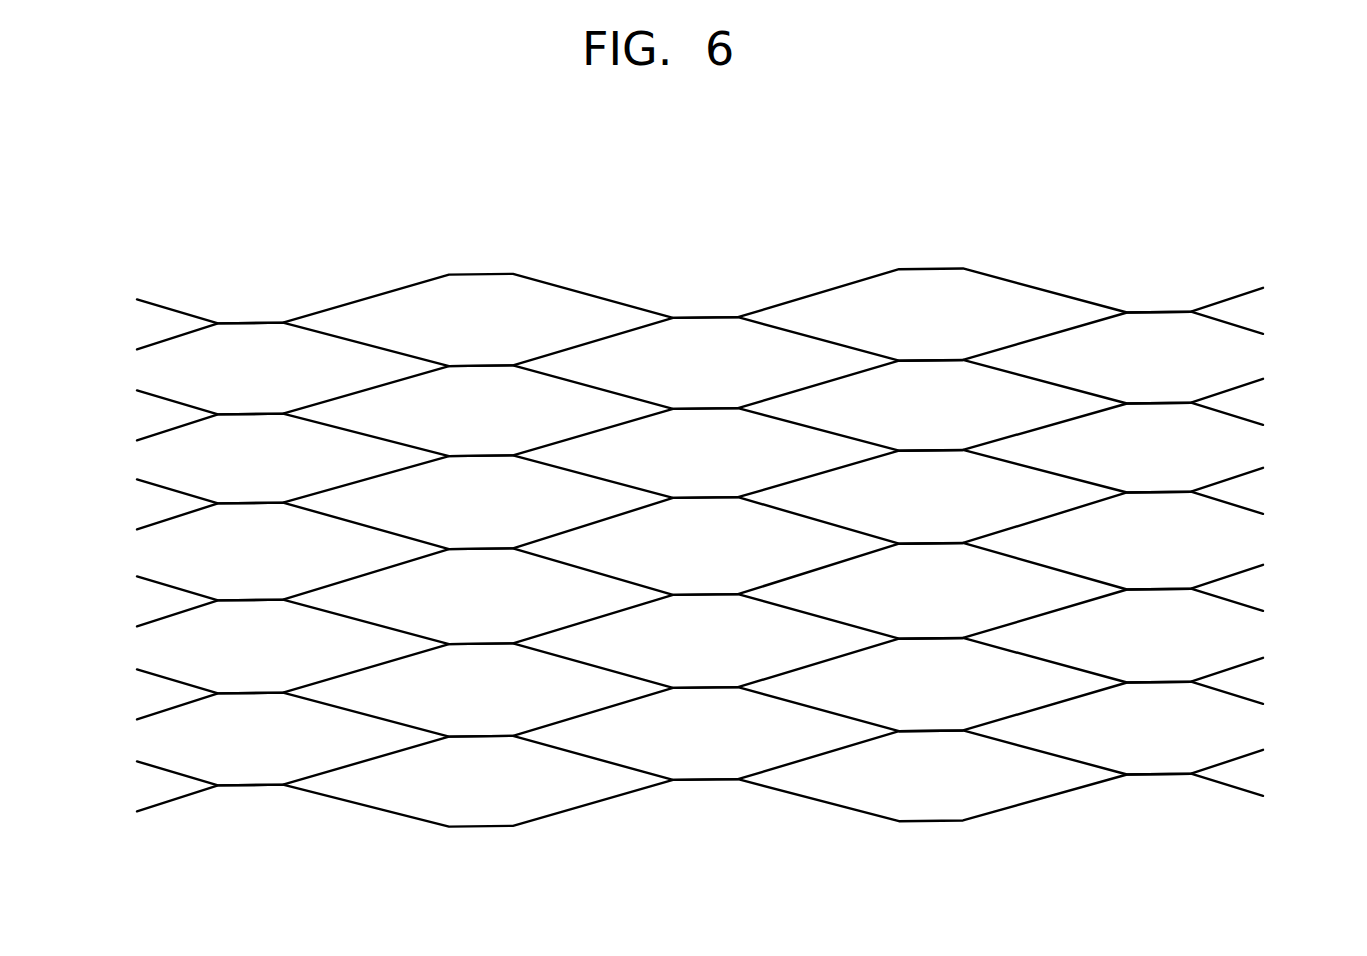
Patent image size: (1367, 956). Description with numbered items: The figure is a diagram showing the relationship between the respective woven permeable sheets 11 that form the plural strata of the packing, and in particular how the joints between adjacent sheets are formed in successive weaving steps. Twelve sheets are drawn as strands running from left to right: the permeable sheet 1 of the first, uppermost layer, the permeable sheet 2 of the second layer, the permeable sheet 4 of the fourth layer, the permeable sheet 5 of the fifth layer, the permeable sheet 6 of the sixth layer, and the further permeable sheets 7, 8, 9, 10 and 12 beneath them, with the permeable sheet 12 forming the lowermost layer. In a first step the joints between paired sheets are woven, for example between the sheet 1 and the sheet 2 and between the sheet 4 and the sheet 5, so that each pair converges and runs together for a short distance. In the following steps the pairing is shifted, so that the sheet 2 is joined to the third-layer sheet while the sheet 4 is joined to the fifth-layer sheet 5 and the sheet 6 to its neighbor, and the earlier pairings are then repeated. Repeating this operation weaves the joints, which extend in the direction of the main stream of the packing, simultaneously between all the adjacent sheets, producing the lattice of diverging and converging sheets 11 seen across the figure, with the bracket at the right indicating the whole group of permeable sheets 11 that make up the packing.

The permeable sheets 11 is at (1289, 303).
The permeable sheet (1) of the first layer 1 is at (669, 290).
The permeable sheet (2) of the second layer 2 is at (669, 346).
The permeable sheet (4) of the fourth layer 4 is at (669, 432).
The permeable sheet (5) of the fifth layer 5 is at (669, 473).
The permeable sheet (6) of the sixth layer 6 is at (669, 522).
The permeable sheet 7 is at (669, 570).
The permeable sheet 8 is at (669, 617).
The permeable sheet 9 is at (670, 663).
The permeable sheet 10 is at (667, 711).
The permeable sheet 12 is at (667, 800).